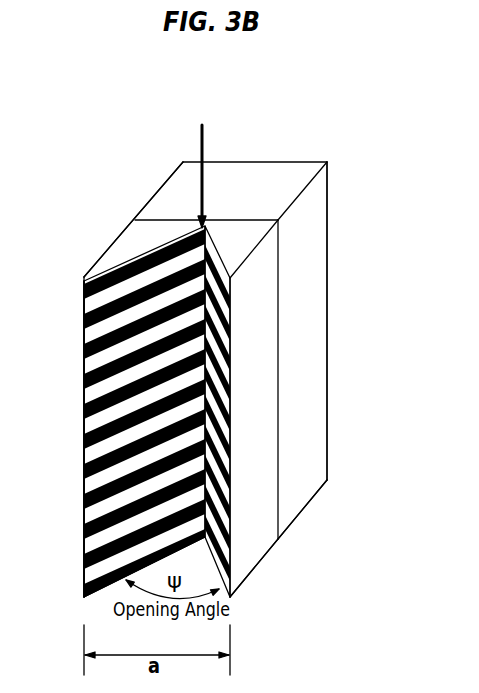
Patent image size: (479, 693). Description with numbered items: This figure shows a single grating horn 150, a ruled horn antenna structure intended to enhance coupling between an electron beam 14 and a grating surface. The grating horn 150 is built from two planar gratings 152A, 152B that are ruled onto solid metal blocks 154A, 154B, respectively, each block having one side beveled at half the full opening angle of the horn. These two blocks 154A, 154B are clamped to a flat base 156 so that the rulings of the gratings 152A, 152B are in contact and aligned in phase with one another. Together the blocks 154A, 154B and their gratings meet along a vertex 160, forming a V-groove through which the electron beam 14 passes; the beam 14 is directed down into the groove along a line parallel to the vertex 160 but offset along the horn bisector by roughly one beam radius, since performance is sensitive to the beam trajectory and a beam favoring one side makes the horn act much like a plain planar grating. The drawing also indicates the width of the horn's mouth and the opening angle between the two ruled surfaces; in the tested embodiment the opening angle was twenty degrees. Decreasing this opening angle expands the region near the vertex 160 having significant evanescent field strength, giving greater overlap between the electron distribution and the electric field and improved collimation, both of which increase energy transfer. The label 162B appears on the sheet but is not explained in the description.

The electron beam 14 is at (205, 133).
The grating horn 150 is at (362, 150).
The planar grating 152A is at (112, 368).
The planar grating 152B is at (222, 428).
The solid metal block 154A is at (140, 230).
The solid metal block 154B is at (257, 532).
The flat base 156 is at (312, 253).
The vertex 160 is at (112, 527).
The mirrored surface 162B is at (42, 439).